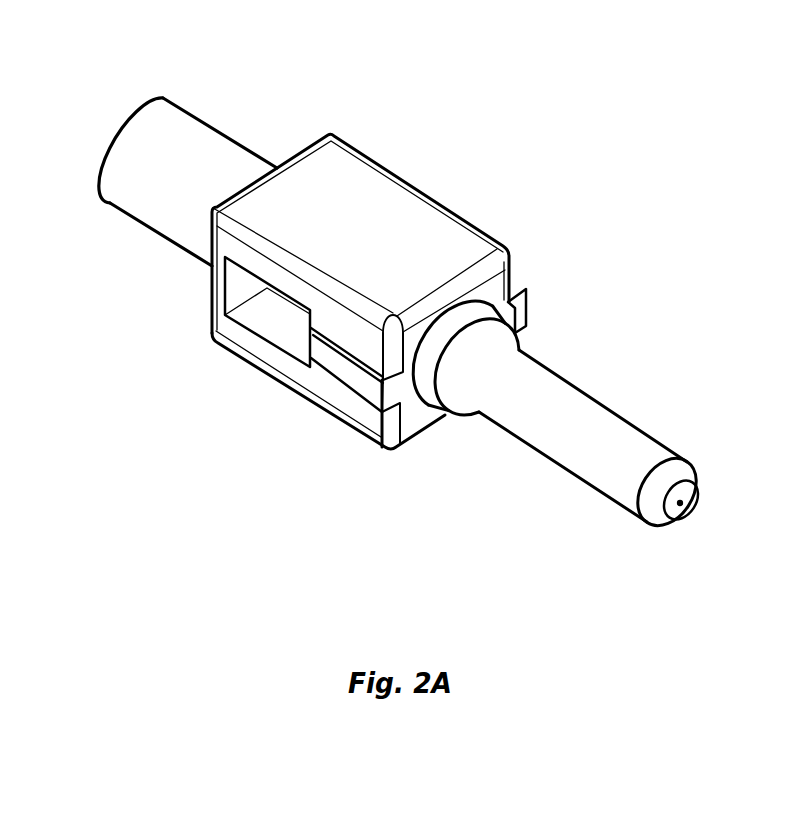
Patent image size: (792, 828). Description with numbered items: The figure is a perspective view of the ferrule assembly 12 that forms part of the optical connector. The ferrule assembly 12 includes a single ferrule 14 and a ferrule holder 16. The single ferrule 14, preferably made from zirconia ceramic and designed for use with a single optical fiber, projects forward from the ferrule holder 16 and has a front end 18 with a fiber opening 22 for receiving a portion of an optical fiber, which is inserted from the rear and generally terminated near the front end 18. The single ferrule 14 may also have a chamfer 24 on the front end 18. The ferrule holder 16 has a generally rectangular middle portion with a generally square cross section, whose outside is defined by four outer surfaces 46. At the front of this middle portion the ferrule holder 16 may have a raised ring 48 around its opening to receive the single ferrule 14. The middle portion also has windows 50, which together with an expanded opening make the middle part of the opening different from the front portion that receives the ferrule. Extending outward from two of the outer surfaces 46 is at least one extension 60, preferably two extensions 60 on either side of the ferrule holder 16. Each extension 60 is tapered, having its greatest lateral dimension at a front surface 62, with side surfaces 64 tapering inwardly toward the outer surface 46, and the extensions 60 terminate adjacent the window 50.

The ferrule assembly 12 is at (437, 331).
The single ferrule 14 is at (627, 468).
The ferrule holder 16 is at (362, 202).
The front end 18 is at (700, 496).
The fiber opening 22 is at (688, 504).
The chamfer 24 is at (651, 520).
The outer surfaces 46 is at (369, 329).
The raised ring 48 is at (515, 343).
The windows 50 is at (264, 307).
The extension 60 is at (360, 386).
The front surface 62 is at (390, 400).
The side surfaces 64 is at (318, 352).